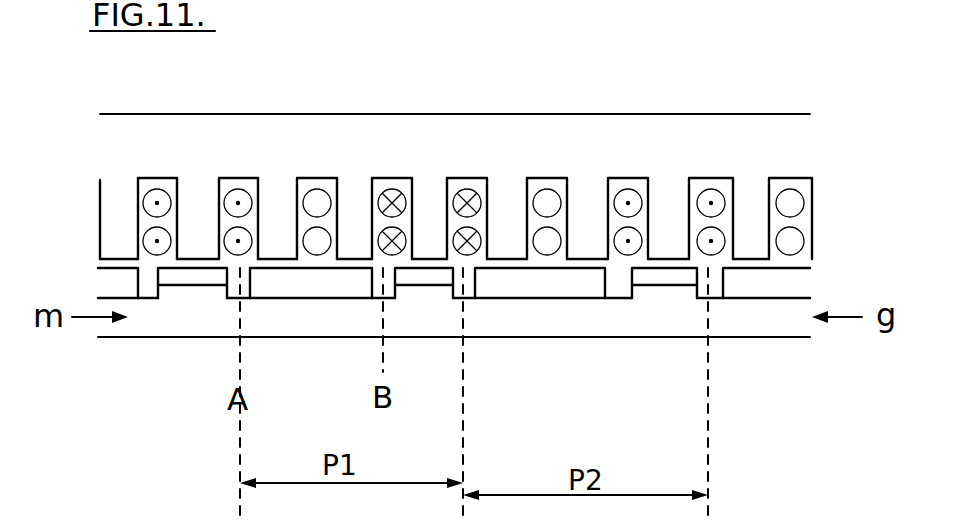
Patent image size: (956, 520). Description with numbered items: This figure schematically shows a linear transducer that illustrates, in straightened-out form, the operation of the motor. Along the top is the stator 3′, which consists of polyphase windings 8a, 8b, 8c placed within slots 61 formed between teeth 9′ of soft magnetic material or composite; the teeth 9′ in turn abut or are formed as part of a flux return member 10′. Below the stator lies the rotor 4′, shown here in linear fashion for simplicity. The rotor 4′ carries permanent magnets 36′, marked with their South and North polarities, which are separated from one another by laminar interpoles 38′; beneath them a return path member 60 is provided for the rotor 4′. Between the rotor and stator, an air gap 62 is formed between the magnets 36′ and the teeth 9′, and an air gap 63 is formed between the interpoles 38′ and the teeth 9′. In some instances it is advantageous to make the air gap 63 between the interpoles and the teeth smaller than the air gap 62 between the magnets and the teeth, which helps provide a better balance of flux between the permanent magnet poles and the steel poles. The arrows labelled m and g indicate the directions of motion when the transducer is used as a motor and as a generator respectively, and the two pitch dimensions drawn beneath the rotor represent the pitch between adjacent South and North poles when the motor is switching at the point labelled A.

The stator 3′ is at (473, 150).
The rotor 4′ is at (183, 292).
The polyphase winding 8a is at (253, 242).
The polyphase winding 8b is at (318, 242).
The polyphase winding 8c is at (415, 197).
The teeth 9′ is at (197, 218).
The flux return member 10′ is at (628, 138).
The permanent magnets 36′ is at (315, 292).
The laminar interpoles 38′ is at (417, 277).
The return path member 60 is at (505, 315).
The slots 61 is at (561, 180).
The air gap 62 is at (277, 262).
The air gap 63 is at (657, 260).